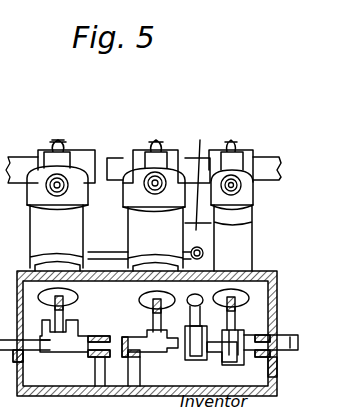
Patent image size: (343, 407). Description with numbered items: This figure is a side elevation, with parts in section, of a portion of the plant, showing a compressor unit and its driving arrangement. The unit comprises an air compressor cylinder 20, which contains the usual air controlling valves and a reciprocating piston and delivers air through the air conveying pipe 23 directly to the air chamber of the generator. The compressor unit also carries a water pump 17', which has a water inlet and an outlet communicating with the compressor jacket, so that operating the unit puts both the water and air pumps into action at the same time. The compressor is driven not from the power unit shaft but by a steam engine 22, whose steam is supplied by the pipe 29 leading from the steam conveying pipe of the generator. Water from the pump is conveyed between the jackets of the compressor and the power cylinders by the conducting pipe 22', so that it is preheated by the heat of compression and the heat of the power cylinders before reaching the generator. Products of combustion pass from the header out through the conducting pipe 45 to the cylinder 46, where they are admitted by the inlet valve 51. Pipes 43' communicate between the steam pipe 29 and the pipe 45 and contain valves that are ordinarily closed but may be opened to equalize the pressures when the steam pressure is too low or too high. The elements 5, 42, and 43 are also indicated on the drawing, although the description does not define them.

The distributor casing 5 is at (138, 311).
The water pump 17' is at (201, 170).
The air compressor cylinder 20 is at (158, 205).
The steam engine 22 is at (245, 205).
The conducting pipe 22' is at (145, 244).
The air conveying pipe 23 is at (150, 182).
The steam pipe 29 is at (239, 181).
The lever 42 is at (9, 7).
The bracket 43 is at (9, 103).
The pipe 43' is at (19, 157).
The conducting pipe 45 is at (62, 182).
The cylinder 46 is at (61, 205).
The inlet valve 51 is at (58, 138).